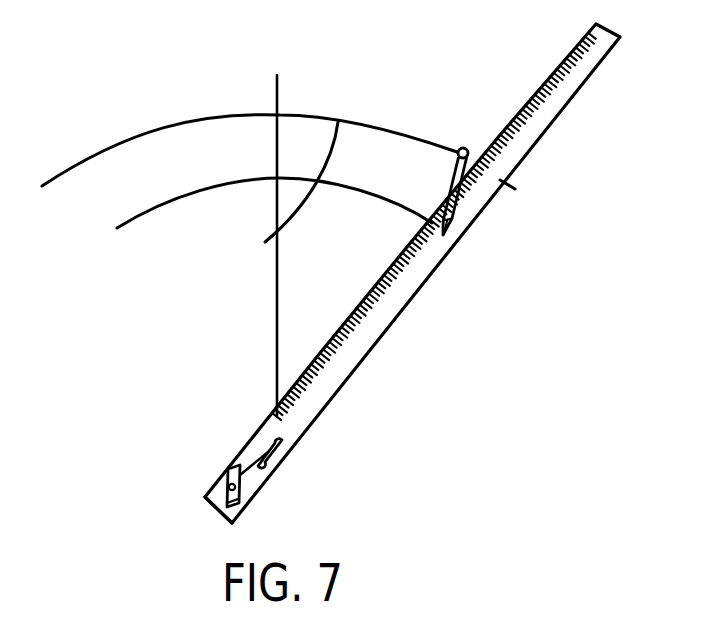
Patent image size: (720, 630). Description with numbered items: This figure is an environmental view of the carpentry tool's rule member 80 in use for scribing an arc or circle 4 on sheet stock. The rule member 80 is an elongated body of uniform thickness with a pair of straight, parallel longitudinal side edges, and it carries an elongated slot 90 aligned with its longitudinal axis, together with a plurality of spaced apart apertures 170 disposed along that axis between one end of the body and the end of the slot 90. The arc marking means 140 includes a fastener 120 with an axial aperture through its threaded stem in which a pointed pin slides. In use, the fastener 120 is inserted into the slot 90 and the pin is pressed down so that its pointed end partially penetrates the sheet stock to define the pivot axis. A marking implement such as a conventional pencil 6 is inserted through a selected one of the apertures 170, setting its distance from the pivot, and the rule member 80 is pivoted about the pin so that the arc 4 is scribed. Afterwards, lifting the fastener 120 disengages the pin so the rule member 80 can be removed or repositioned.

The arc 4 is at (366, 197).
The marking implement 6 is at (455, 168).
The rule member 80 is at (614, 131).
The elongated slot 90 is at (265, 460).
The fastener 120 is at (229, 472).
The arc marking means 140 is at (206, 521).
The spaced apart apertures 170 is at (340, 355).